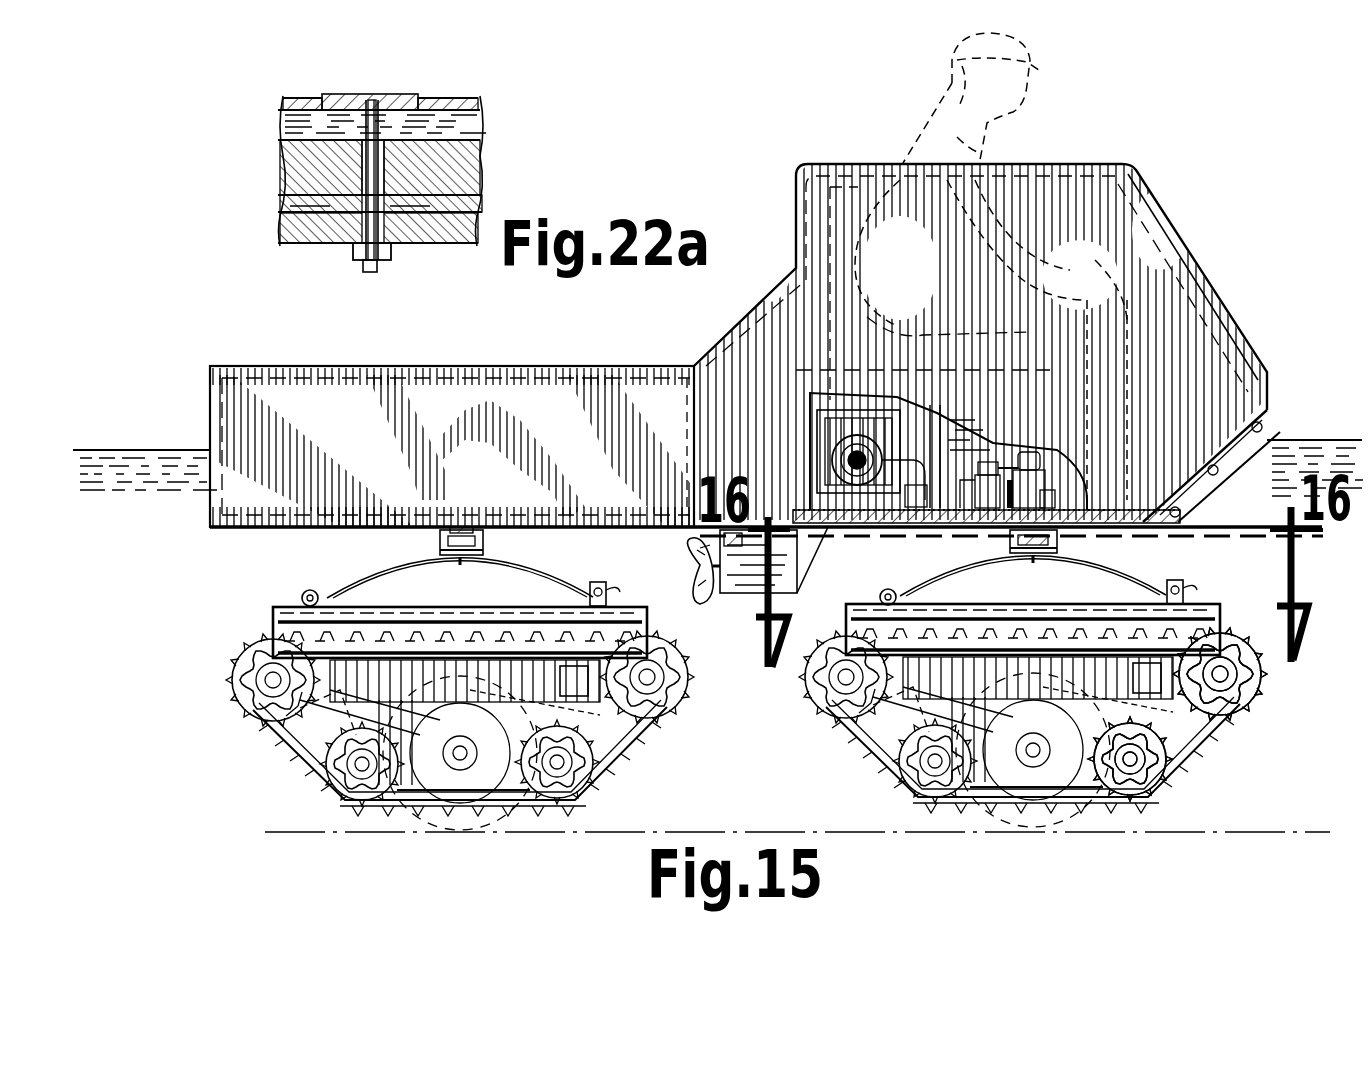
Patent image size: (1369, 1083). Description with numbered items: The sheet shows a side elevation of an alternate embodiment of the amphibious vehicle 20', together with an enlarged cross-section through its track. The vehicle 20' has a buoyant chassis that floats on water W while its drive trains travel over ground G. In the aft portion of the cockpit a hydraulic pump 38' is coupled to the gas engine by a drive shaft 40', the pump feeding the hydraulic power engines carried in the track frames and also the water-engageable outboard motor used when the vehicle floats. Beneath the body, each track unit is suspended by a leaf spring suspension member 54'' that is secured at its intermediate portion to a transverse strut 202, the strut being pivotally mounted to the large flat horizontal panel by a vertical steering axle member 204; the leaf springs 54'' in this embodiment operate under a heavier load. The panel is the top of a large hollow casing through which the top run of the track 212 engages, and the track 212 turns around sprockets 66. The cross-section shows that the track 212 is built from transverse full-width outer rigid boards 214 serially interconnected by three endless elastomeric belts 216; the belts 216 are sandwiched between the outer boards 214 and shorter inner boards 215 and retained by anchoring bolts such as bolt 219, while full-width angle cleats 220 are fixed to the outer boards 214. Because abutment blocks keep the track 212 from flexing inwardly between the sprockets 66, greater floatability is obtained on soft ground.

In FIG. 22A, the angle cleats 220 is at (477, 113).
In FIG. 22A, the outer rigid boards 214 is at (473, 158).
In FIG. 22A, the endless elastomeric belts 216 is at (480, 200).
In FIG. 22A, the anchoring bolt 219 is at (344, 214).
In FIG. 22A, the inner boards 215 is at (433, 231).
In FIG. 15, the amphibious vehicle 20' is at (981, 326).
In FIG. 15, the water W is at (127, 450).
In FIG. 15, the hydraulic pump 38' is at (948, 485).
In FIG. 15, the drive shaft 40' is at (976, 514).
In FIG. 15, the leaf spring suspension member 54'' is at (759, 578).
In FIG. 15, the transverse strut 202 is at (490, 545).
In FIG. 15, the vertical steering axle member 204 is at (1087, 527).
In FIG. 15, the track 212 is at (1200, 768).
In FIG. 15, the sprockets 66 is at (1248, 700).
In FIG. 15, the ground G is at (892, 833).